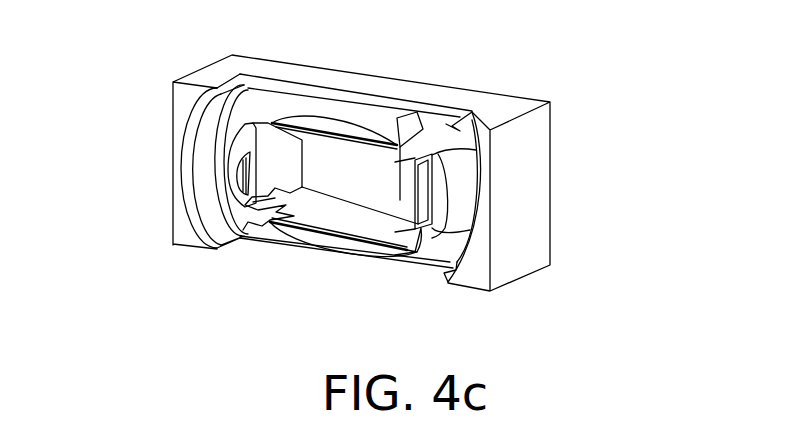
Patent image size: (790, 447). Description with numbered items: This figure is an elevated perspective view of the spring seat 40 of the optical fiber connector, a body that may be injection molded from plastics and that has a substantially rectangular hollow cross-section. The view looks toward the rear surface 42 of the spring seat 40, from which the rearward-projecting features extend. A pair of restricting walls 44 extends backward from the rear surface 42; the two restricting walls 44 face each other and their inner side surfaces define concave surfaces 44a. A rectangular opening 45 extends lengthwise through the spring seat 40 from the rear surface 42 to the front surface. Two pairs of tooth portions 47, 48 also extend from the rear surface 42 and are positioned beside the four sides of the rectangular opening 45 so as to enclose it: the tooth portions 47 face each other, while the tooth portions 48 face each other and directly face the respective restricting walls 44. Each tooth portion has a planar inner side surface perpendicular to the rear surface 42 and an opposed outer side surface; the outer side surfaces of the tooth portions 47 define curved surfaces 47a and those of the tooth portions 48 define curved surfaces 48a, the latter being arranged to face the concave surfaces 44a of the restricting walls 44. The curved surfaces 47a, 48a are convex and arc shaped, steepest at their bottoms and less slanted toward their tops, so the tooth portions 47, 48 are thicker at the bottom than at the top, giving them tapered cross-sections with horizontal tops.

The spring seat 40 is at (543, 73).
The rear surface 42 is at (267, 103).
The restricting walls 44 is at (182, 235).
The concave surfaces 44a is at (203, 156).
The rectangular opening 45 is at (447, 279).
The tooth portions 47 is at (350, 136).
The curved surfaces 47a is at (346, 250).
The tooth portions 48 is at (431, 167).
The curved surfaces 48a is at (450, 203).